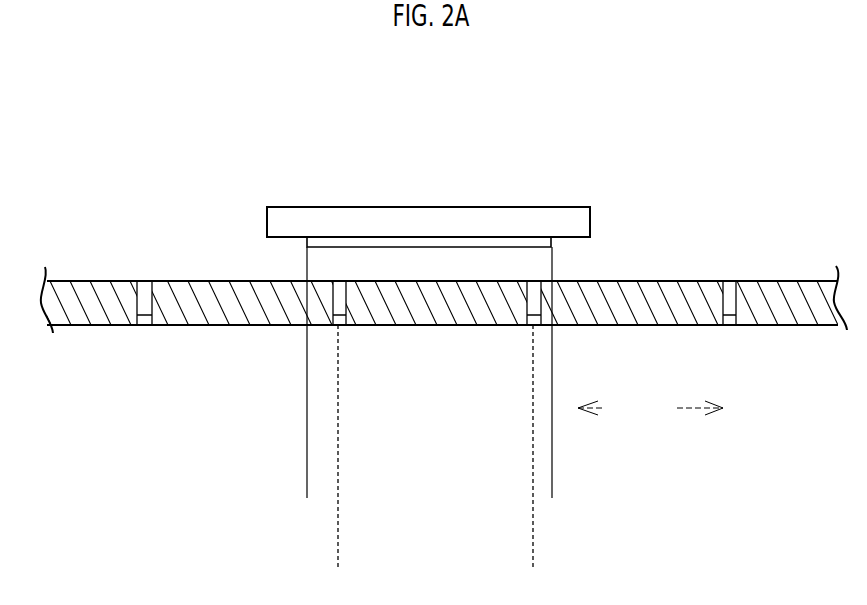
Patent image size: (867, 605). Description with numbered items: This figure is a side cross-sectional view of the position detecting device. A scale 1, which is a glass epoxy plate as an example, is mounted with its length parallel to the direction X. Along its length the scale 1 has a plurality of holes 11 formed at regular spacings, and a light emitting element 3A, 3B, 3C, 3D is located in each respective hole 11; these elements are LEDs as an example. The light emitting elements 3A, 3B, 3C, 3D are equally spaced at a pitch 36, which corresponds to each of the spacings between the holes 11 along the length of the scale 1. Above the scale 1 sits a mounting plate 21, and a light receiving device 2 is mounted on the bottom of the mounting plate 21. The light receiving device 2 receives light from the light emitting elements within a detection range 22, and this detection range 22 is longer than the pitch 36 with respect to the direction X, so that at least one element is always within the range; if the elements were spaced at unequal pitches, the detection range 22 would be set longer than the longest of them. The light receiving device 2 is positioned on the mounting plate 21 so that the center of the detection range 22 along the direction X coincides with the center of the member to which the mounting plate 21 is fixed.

The scale 1 is at (108, 281).
The holes 11 is at (152, 267).
The light receiving device 2 is at (551, 246).
The mounting plate 21 is at (268, 208).
The detection range 22 is at (552, 472).
The pitch 36 is at (533, 532).
The light emitting element 3A is at (145, 318).
The light emitting element 3B is at (339, 325).
The light emitting element 3C is at (533, 325).
The light emitting element 3D is at (731, 320).
The direction X is at (650, 396).